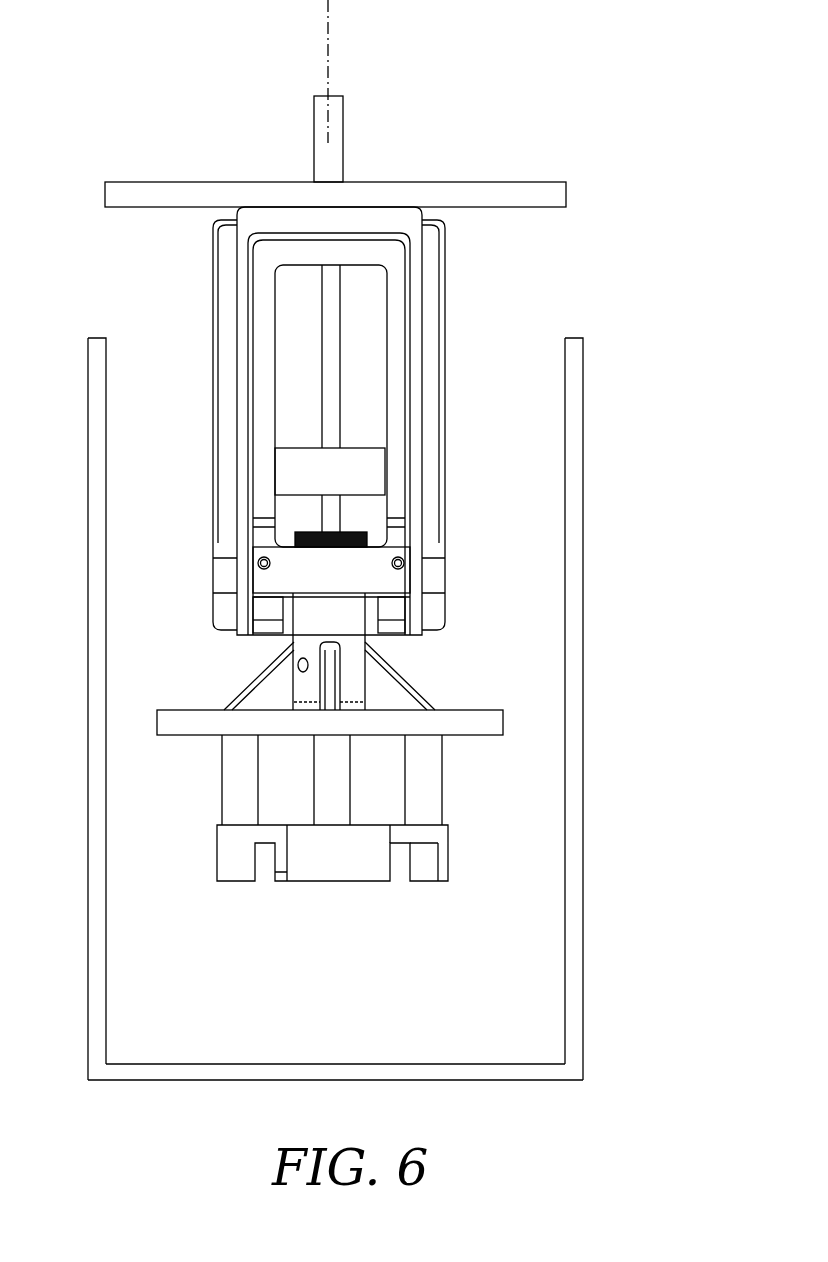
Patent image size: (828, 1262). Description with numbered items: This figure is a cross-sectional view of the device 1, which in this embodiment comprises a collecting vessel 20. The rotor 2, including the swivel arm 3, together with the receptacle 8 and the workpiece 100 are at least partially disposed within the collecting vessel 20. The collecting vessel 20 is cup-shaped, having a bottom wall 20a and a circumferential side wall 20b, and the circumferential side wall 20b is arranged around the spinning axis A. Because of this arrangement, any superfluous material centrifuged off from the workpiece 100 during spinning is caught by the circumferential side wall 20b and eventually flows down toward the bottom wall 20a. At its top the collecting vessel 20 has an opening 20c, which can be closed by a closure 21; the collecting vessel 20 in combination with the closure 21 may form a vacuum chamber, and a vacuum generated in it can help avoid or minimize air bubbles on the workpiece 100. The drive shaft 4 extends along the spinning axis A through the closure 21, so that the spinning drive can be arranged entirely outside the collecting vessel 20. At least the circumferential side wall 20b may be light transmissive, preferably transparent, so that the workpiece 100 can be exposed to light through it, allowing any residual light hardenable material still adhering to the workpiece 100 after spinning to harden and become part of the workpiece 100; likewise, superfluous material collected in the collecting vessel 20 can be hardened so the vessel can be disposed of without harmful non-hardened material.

The device 1 is at (632, 210).
The rotor 2 is at (430, 249).
The swivel arm 3 is at (397, 300).
The drive shaft 4 is at (323, 153).
The receptacle 8 is at (503, 719).
The collecting vessel 20 is at (573, 622).
The bottom wall 20a is at (528, 1070).
The circumferential side wall 20b is at (577, 960).
The opening 20c is at (157, 375).
The closure 21 is at (467, 182).
The workpiece 100 is at (365, 857).
The spinning axis A is at (328, 20).